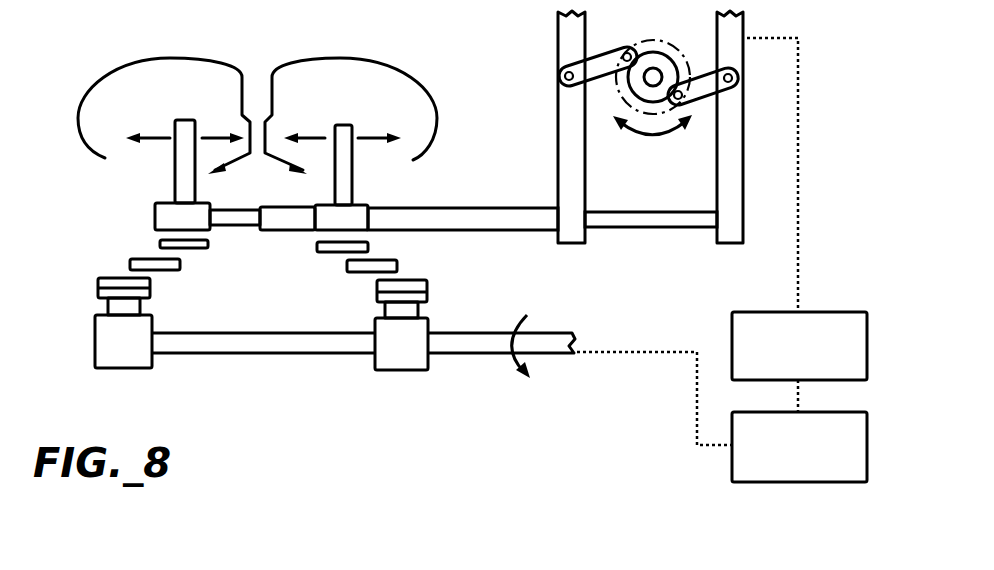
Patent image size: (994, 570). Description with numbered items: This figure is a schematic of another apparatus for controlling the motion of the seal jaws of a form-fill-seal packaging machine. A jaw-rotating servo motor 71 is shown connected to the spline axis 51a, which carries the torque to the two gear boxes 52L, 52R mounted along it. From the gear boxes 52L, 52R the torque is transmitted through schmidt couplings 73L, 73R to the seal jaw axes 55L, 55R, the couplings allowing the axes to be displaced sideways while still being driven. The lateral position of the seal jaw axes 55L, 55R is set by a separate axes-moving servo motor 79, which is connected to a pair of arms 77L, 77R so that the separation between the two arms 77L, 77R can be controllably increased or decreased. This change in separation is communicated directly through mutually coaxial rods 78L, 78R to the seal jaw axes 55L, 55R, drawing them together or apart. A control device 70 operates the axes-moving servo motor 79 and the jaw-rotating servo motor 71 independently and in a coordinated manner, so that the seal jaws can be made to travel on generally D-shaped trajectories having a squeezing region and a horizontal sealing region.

The seal jaw axis 55L is at (173, 193).
The seal jaw axis 55R is at (352, 183).
The rod 78L is at (530, 232).
The rod 78R is at (660, 228).
The arm 77L is at (557, 182).
The arm 77R is at (743, 185).
The axes-moving servo motor 79 is at (670, 48).
The schmidt coupling 73L is at (87, 237).
The schmidt coupling 73R is at (442, 240).
The gear box 52L is at (132, 368).
The gear box 52R is at (395, 370).
The spline axis 51a is at (363, 362).
The control device 70 is at (817, 312).
The jaw-rotating servo motor 71 is at (742, 482).